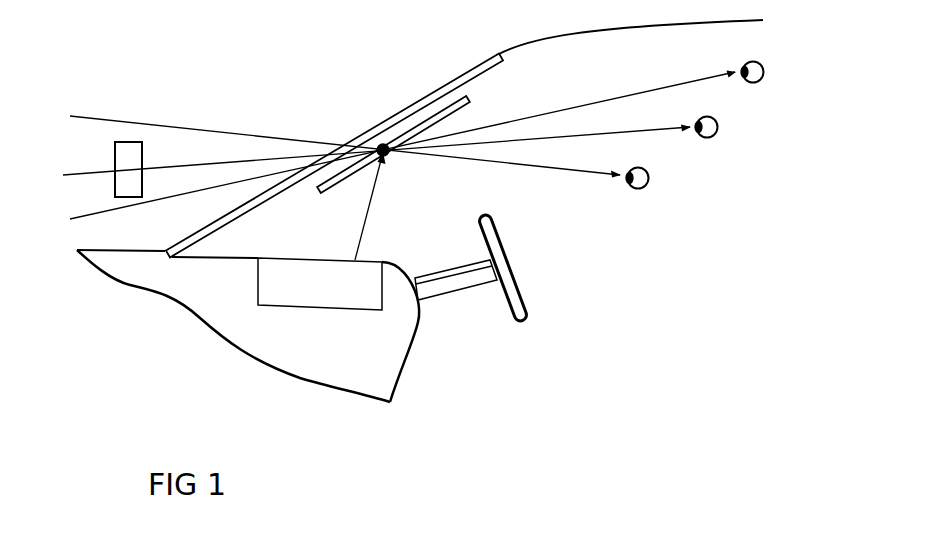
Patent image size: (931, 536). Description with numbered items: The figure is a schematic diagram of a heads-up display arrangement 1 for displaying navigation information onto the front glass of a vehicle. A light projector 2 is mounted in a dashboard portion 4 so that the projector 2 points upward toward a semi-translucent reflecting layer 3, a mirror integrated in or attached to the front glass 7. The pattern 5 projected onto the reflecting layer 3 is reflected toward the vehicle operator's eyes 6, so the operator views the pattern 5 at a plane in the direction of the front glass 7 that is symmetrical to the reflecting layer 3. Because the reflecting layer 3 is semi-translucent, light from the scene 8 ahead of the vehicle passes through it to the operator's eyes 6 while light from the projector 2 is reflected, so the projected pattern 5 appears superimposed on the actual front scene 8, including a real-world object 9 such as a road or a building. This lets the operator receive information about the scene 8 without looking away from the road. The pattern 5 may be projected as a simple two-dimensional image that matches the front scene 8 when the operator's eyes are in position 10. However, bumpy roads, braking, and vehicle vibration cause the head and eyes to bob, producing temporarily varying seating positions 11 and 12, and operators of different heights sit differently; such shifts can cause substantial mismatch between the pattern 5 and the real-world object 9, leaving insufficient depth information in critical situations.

The heads-up display arrangement 1 is at (394, 199).
The light projector 2 is at (374, 263).
The semi-translucent reflecting layer 3 is at (470, 99).
The dashboard portion 4 is at (392, 362).
The pattern 5 is at (390, 155).
The vehicle operator's eyes 6 is at (735, 133).
The front glass 7 is at (466, 71).
The scene 8 is at (94, 160).
The real-world object 9 is at (140, 142).
The position 10 is at (718, 121).
The seating position 11 is at (764, 66).
The seating position 12 is at (649, 172).